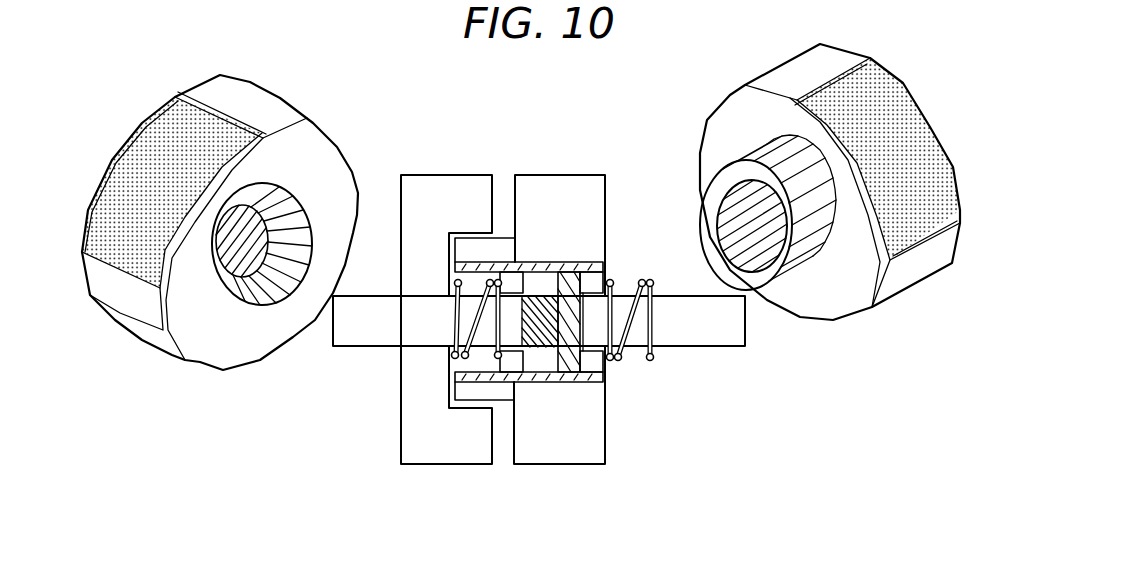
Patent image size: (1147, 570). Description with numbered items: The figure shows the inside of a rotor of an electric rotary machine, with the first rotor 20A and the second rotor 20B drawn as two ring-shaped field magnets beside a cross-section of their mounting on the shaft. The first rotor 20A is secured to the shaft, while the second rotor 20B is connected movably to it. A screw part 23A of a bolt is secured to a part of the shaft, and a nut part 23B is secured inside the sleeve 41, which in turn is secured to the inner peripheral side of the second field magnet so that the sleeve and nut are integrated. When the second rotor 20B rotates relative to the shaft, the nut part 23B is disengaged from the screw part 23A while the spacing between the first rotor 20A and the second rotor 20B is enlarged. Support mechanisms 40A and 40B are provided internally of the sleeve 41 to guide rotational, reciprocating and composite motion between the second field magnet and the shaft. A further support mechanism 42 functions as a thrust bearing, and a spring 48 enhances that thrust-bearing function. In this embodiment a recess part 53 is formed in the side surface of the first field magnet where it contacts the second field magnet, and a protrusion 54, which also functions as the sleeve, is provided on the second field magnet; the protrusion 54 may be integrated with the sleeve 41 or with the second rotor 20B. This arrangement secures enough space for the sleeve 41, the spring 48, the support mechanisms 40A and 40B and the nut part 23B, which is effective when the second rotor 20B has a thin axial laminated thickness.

The first rotor 20A is at (405, 175).
The second rotor 20B is at (603, 175).
The sleeve 41 is at (498, 260).
The screw part 23A is at (545, 332).
The nut part 23B is at (563, 290).
The support mechanism 40A is at (515, 362).
The support mechanism 40B is at (595, 362).
The support mechanism 42 is at (620, 360).
The spring 48 is at (452, 353).
The recess part 53 is at (257, 287).
The protrusion 54 is at (488, 250).